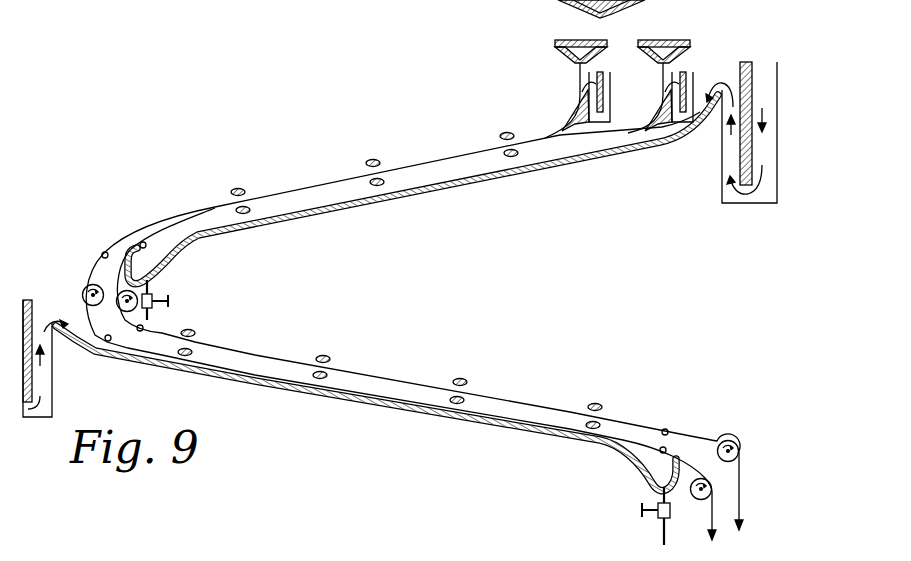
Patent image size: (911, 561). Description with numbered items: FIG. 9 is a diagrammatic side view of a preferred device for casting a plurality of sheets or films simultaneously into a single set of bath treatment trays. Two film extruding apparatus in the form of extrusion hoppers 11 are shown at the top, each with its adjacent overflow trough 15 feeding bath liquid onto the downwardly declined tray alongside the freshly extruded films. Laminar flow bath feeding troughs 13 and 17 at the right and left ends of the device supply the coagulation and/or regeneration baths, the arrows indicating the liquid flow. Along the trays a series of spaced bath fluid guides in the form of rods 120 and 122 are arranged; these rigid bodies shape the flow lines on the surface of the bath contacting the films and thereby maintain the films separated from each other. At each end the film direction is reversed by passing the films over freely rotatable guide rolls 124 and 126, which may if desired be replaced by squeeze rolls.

The extrusion hopper 11 is at (555, 43).
The laminar flow bath feeding trough 13 is at (778, 112).
The overflow trough 15 is at (611, 97).
The laminar flow bath feeding trough 17 is at (53, 390).
The bath fluid guide rod 120 is at (236, 186).
The bath fluid guide rod 122 is at (243, 216).
The guide roll 124 is at (84, 288).
The guide roll 126 is at (136, 308).